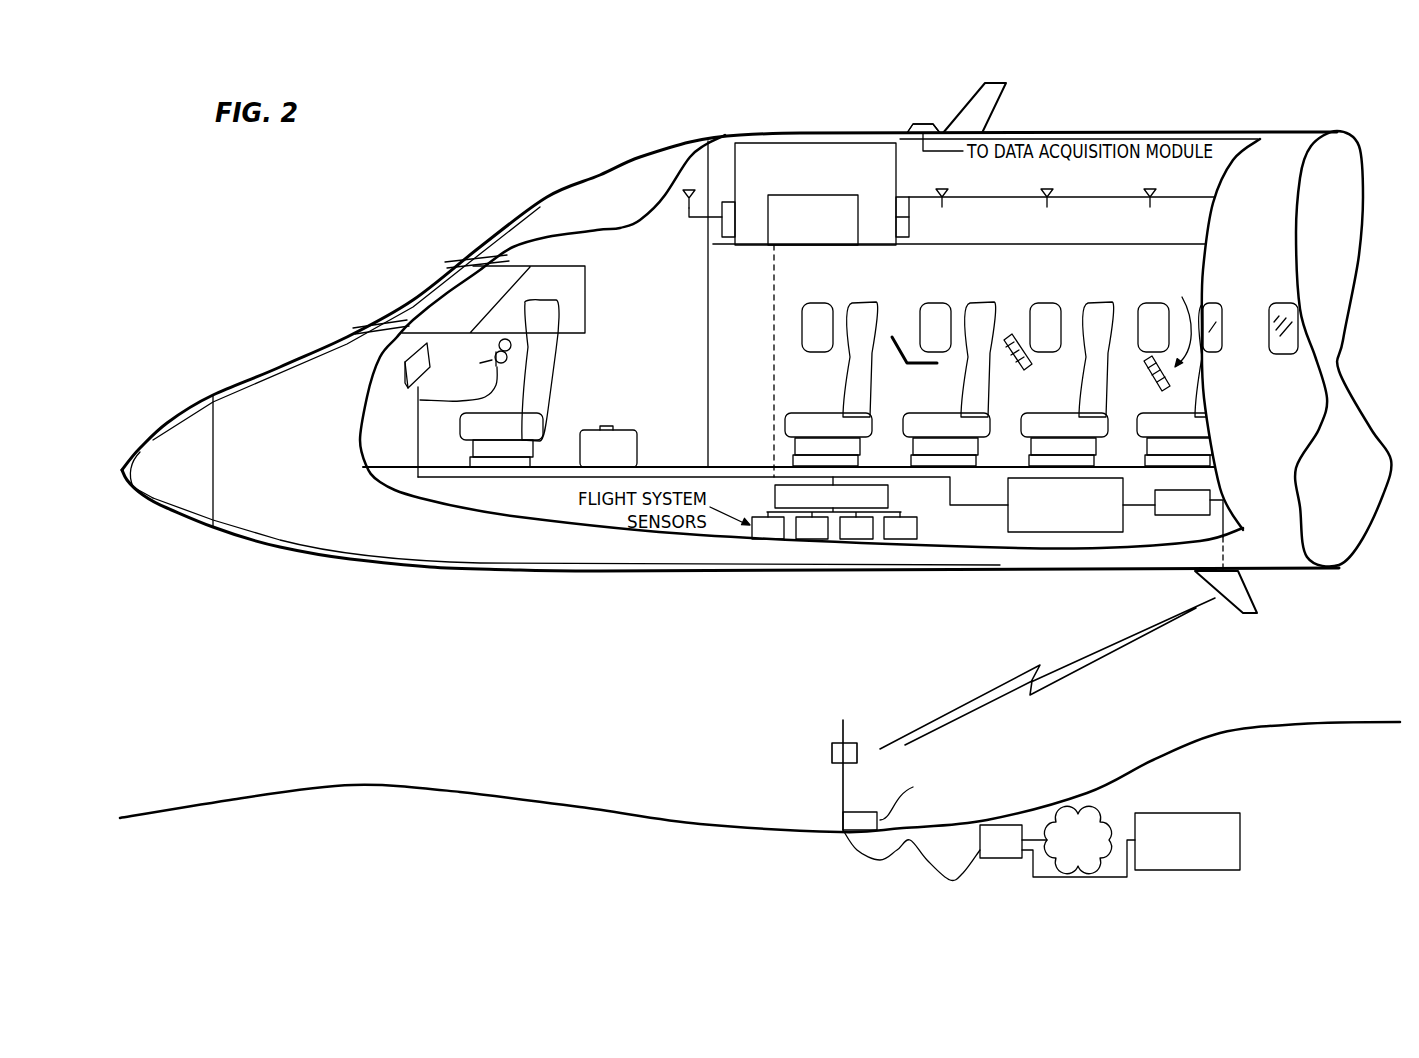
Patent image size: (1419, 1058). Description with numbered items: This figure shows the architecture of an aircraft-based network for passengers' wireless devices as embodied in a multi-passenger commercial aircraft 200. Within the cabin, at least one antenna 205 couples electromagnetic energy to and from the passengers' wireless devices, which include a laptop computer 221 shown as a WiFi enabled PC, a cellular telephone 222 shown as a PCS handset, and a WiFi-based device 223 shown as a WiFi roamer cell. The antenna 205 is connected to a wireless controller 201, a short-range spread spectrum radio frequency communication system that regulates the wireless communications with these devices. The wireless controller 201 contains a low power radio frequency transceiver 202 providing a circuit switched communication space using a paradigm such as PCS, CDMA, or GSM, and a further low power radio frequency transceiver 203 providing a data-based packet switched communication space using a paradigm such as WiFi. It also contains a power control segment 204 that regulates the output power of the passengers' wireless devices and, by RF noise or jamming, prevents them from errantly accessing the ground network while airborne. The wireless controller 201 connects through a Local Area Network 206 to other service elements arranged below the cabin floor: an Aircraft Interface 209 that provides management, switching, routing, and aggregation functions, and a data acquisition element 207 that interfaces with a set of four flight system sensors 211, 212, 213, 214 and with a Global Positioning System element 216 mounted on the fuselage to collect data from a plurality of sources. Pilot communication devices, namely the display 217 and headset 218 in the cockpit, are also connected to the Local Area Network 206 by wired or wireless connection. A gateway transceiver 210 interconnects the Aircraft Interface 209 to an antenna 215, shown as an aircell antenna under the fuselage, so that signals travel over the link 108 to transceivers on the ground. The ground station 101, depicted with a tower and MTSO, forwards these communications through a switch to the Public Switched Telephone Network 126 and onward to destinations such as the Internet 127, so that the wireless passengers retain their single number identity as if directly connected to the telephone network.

The multi-passenger commercial aircraft 200 is at (262, 545).
The wireless controller 201 is at (730, 165).
The low power radio frequency transceiver 202 is at (910, 222).
The low power radio frequency transceiver 203 is at (718, 225).
The power control segment 204 is at (770, 213).
The antenna 205 is at (1052, 187).
The Local Area Network 206 is at (543, 477).
The data acquisition element 207 is at (888, 497).
The Aircraft Interface 209 is at (1087, 532).
The gateway transceiver 210 is at (1173, 515).
The flight system sensor 211 is at (764, 539).
The flight system sensor 212 is at (808, 539).
The flight system sensor 213 is at (852, 539).
The flight system sensor 214 is at (896, 539).
The antenna 215 is at (1262, 600).
The Global Positioning System element 216 is at (920, 127).
The display 217 is at (400, 373).
The headset 218 is at (480, 353).
The laptop computer 221 is at (892, 335).
The cellular telephone 222 is at (1022, 332).
The WiFi-based device 223 is at (1168, 392).
The link 108 is at (1083, 670).
The ground station 101 is at (1023, 883).
The Public Switched Telephone Network 126 is at (1097, 813).
The Internet 127 is at (1207, 813).